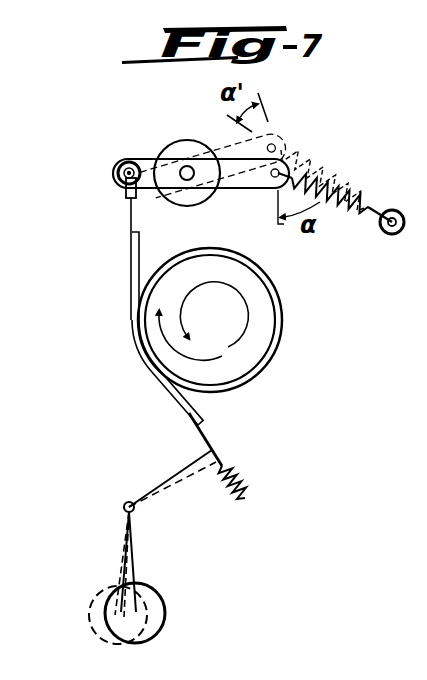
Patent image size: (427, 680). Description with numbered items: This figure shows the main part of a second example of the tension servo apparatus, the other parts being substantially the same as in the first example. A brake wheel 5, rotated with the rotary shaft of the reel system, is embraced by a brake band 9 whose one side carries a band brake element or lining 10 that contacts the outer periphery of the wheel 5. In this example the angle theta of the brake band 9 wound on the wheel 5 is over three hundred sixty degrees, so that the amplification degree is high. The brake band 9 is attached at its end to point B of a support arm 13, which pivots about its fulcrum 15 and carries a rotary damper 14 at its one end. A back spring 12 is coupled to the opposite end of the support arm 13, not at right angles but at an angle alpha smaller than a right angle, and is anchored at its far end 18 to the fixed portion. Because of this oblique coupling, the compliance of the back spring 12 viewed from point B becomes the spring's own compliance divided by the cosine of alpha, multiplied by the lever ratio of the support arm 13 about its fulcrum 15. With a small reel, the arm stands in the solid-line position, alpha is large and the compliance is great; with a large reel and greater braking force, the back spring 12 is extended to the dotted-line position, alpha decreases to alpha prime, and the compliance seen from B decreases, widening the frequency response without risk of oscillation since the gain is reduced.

The brake wheel 5 is at (276, 333).
The brake band 9 is at (190, 422).
The band brake element or lining 10 is at (200, 422).
The back spring 12 is at (362, 217).
The support arm 13 is at (147, 158).
The rotary damper 14 is at (190, 141).
The fulcrum 15 is at (209, 197).
The anchor 18 is at (397, 211).
The end B of support arm B is at (121, 164).